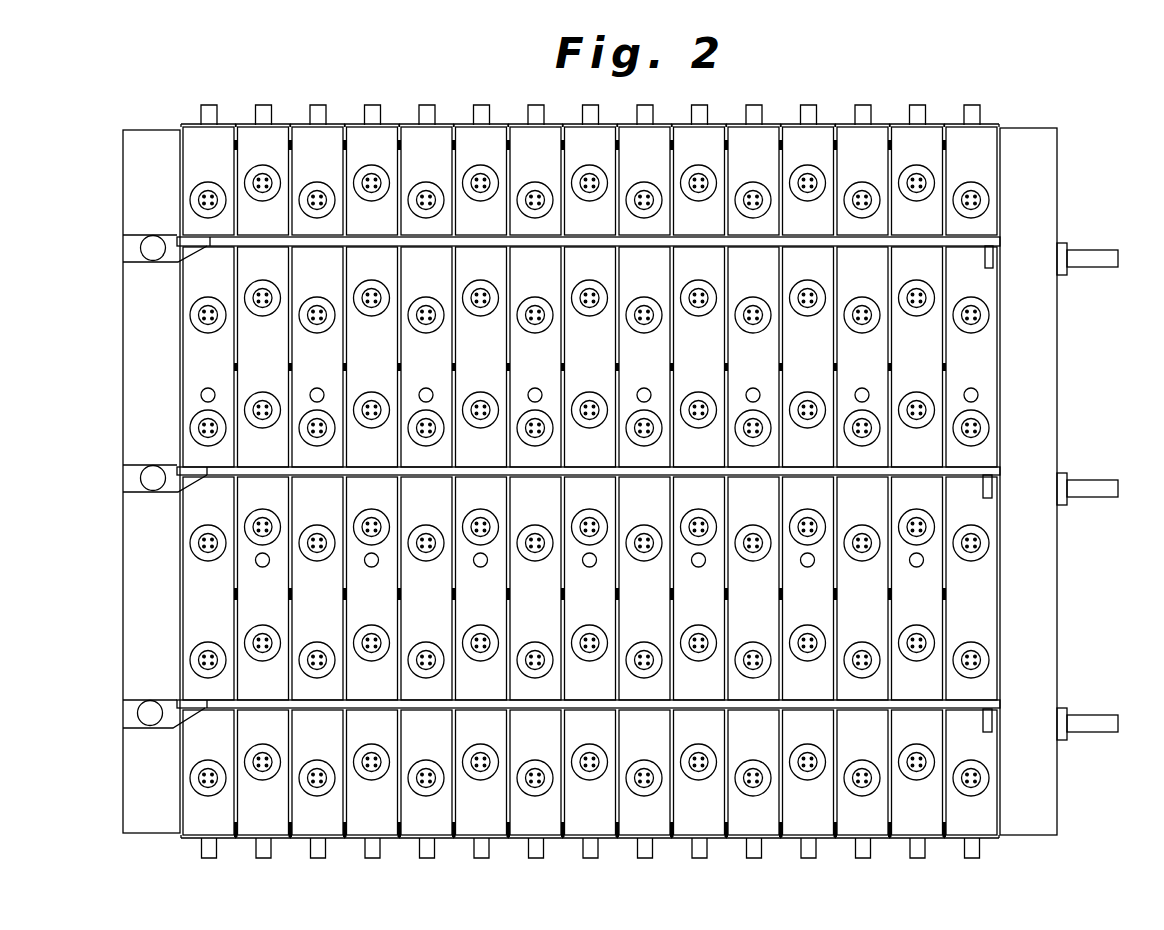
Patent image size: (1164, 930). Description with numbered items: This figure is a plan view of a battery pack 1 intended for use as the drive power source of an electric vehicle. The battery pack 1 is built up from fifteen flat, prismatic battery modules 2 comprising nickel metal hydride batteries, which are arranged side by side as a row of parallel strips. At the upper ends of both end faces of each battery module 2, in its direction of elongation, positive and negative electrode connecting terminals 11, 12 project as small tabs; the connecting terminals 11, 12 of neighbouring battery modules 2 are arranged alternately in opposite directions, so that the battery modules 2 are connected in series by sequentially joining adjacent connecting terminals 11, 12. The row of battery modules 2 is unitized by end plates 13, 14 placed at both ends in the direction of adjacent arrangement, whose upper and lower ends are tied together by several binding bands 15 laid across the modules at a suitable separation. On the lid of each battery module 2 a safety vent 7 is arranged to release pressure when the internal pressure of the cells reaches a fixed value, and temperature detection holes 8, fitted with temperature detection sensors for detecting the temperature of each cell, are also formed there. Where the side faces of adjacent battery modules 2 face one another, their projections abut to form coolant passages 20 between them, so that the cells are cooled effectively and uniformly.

The battery pack 1 is at (1096, 193).
The battery module 2 is at (978, 370).
The safety vent 7 is at (752, 782).
The temperature detection hole 8 is at (927, 560).
The positive electrode connecting terminal 11 is at (268, 114).
The negative electrode connecting terminal 12 is at (203, 112).
The end plate 13 is at (1035, 403).
The end plate 14 is at (145, 540).
The binding band 15 is at (225, 242).
The coolant passage 20 is at (947, 630).